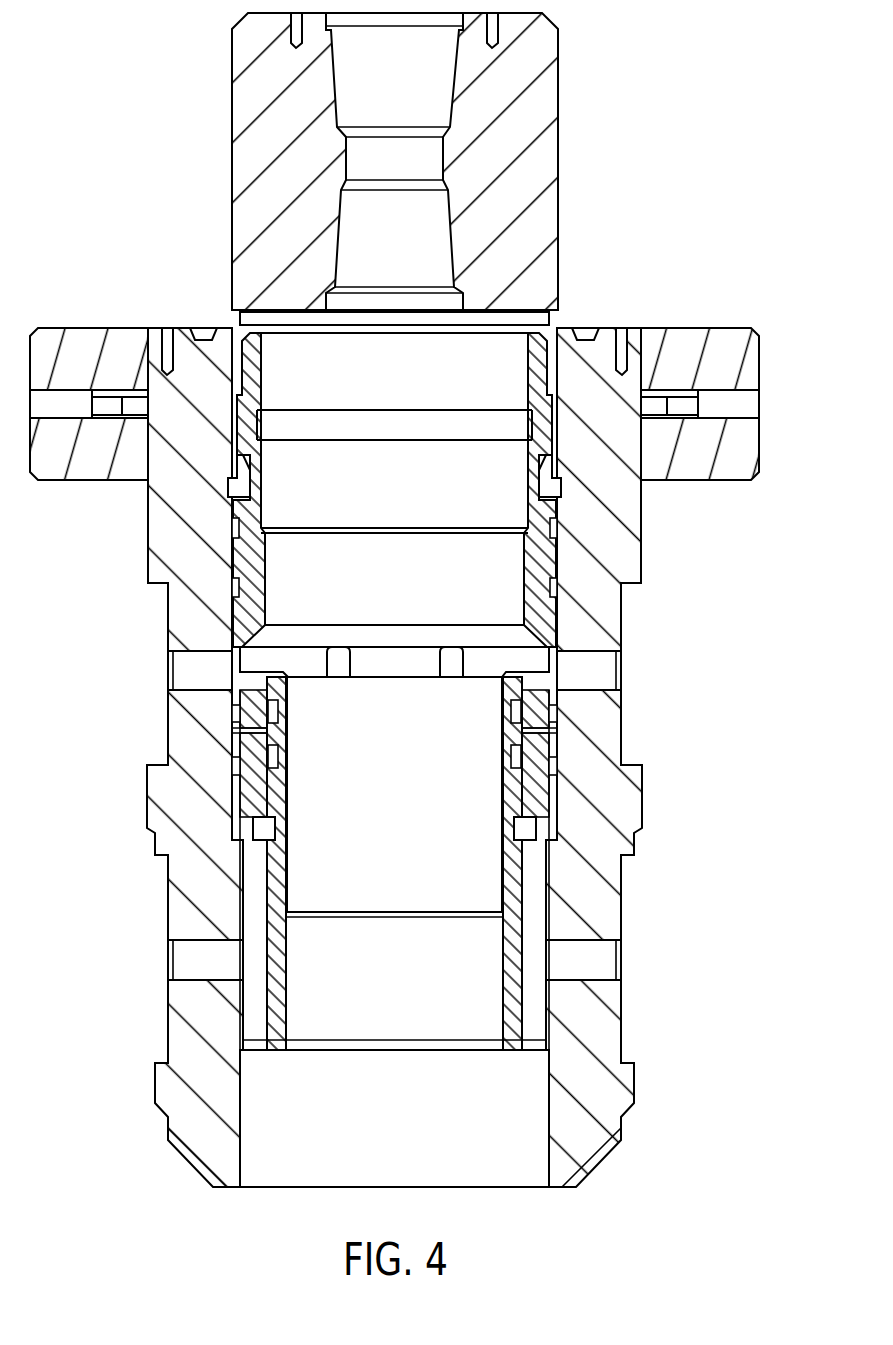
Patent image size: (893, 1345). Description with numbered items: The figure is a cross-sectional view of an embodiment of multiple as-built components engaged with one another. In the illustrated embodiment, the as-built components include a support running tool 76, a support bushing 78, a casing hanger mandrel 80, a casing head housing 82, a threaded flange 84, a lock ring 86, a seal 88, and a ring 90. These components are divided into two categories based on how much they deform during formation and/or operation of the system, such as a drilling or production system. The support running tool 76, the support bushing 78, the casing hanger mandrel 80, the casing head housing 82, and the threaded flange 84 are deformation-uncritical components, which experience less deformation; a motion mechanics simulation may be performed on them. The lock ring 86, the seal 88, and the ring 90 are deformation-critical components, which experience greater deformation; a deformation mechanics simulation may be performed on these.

The support running tool 76 is at (538, 167).
The support bushing 78 is at (538, 545).
The casing hanger mandrel 80 is at (513, 873).
The casing head housing 82 is at (593, 1067).
The threaded flange 84 is at (745, 458).
The lock ring 86 is at (560, 490).
The seal 88 is at (557, 587).
The ring 90 is at (520, 753).